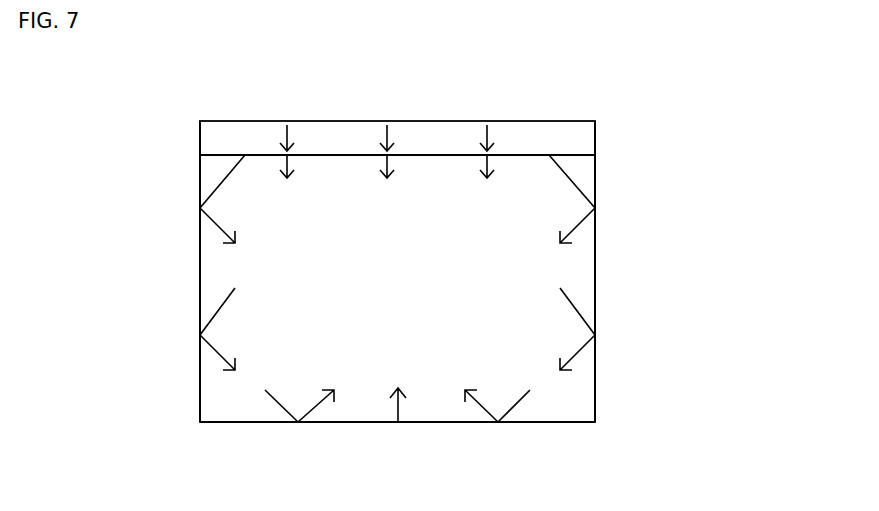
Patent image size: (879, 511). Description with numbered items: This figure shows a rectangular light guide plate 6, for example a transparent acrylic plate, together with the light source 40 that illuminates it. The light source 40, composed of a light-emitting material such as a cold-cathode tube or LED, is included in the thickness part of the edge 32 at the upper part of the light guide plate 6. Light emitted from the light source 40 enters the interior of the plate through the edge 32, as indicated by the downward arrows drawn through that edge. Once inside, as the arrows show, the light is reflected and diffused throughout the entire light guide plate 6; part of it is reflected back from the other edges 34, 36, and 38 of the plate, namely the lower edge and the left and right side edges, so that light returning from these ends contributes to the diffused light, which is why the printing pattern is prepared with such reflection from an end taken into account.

The light guide plate 6 is at (598, 258).
The edge 32 is at (268, 155).
The edge 34 is at (442, 425).
The edge 36 is at (200, 293).
The edge 38 is at (597, 368).
The light source 40 is at (576, 133).